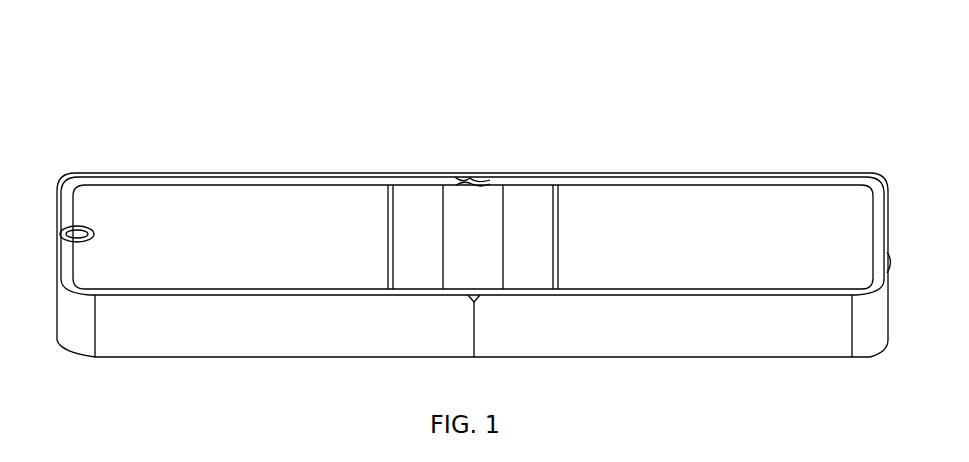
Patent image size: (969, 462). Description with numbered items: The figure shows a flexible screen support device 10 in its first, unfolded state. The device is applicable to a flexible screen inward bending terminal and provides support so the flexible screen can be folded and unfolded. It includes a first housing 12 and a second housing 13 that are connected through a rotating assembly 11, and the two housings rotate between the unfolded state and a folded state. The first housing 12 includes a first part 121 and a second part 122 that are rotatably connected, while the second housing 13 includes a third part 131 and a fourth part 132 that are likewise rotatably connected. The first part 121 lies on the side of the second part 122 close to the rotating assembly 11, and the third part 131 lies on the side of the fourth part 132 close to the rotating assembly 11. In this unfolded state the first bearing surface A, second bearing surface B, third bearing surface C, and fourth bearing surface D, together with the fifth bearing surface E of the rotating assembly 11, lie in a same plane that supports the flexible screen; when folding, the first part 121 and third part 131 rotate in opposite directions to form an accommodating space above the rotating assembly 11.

The flexible screen support device 10 is at (465, 83).
The rotating assembly 11 is at (453, 193).
The first housing 12 is at (385, 112).
The first part 121 is at (410, 197).
The second part 122 is at (277, 200).
The second housing 13 is at (605, 112).
The third part 131 is at (517, 200).
The fourth part 132 is at (600, 195).